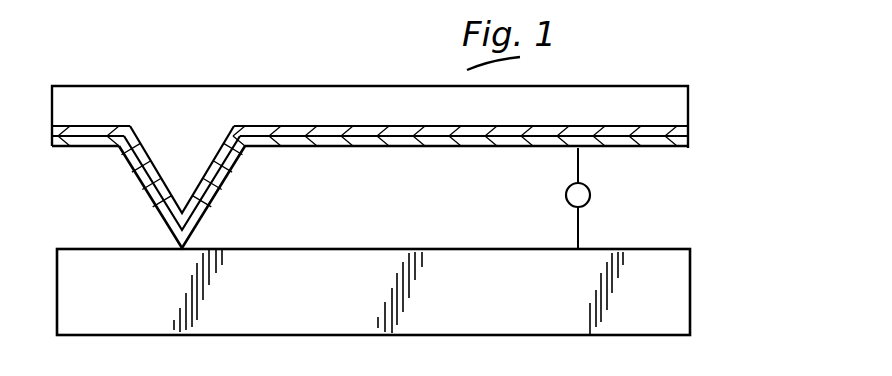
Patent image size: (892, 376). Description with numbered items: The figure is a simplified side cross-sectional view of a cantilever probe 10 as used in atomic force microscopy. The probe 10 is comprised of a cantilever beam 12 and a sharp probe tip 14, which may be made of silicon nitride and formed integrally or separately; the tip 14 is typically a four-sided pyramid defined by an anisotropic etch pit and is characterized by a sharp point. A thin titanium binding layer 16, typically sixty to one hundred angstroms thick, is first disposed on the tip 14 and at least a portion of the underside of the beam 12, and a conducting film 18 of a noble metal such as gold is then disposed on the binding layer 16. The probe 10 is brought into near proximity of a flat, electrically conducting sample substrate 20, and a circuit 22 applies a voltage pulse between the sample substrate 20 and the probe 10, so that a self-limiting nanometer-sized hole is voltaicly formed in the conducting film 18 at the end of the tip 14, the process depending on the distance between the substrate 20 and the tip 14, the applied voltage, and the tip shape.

The probe 10 is at (137, 74).
The cantilever beam 12 is at (680, 102).
The probe tip 14 is at (183, 172).
The binding layer 16 is at (688, 132).
The conducting film 18 is at (667, 148).
The sample substrate 20 is at (682, 278).
The circuit 22 is at (590, 195).